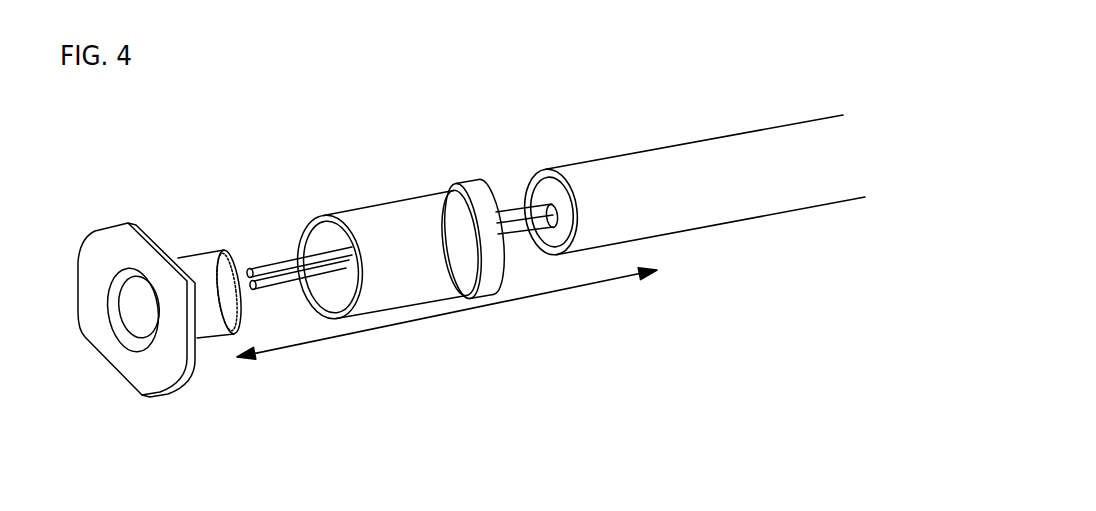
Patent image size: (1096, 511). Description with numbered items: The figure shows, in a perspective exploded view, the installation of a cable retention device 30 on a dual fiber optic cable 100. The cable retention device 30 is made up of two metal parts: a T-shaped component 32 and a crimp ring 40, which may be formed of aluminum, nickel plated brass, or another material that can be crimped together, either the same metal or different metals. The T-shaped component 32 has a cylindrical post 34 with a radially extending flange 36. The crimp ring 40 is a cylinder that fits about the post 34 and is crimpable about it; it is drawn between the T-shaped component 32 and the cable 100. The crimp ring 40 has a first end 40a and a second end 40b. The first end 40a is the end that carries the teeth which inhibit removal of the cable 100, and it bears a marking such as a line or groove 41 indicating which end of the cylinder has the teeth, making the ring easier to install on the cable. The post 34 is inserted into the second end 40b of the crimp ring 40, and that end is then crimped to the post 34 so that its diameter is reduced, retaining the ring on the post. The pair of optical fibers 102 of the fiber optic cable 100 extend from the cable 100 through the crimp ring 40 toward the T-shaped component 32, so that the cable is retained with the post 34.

The cable retention device 30 is at (403, 375).
The T-shaped component 32 is at (147, 257).
The cylindrical post 34 is at (195, 263).
The radially extending flange 36 is at (108, 263).
The crimp ring 40 is at (425, 175).
The first end of the crimp ring 40a is at (465, 182).
The second end of the crimp ring 40b is at (332, 222).
The line or groove 41 is at (445, 190).
The fiber optic cable 100 is at (647, 198).
The optical fibers 102 is at (273, 280).